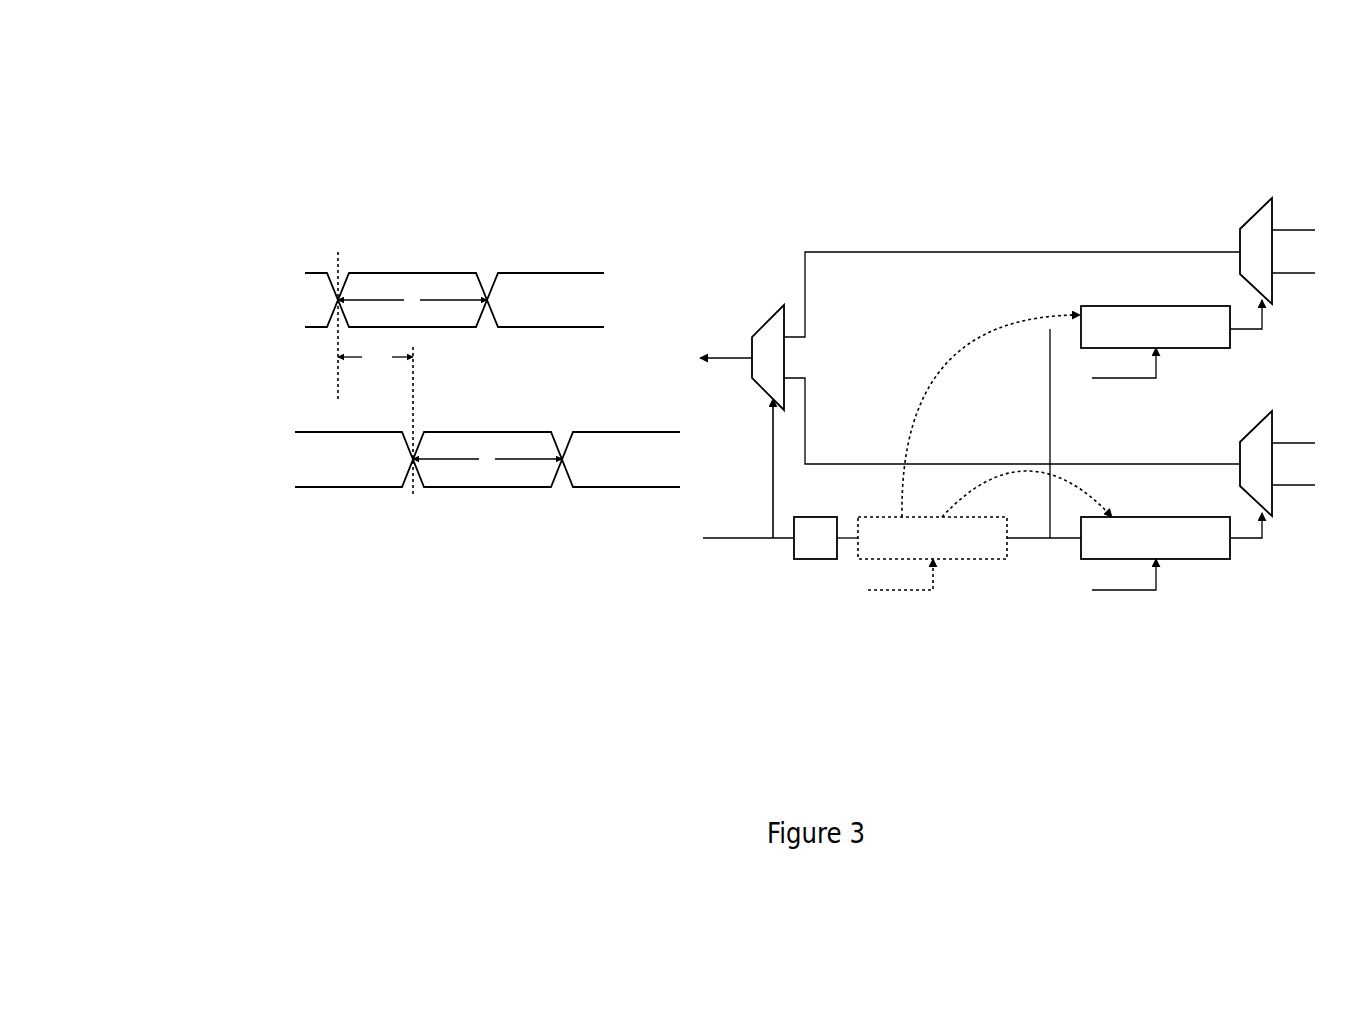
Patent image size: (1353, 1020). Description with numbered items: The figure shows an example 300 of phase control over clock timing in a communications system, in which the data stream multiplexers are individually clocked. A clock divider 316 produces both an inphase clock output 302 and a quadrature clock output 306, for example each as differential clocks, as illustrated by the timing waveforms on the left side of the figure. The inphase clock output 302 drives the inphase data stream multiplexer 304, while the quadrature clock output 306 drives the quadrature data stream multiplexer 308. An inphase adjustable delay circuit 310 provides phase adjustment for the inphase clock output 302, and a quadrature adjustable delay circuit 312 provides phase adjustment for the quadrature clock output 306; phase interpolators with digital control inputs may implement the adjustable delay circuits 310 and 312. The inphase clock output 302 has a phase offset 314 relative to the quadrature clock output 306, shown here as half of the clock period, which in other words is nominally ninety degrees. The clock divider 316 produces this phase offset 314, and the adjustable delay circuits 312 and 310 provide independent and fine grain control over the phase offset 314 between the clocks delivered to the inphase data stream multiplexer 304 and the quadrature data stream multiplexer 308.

The example of phase control over clock timing 300 is at (195, 85).
The inphase clock output 302 is at (1249, 539).
The inphase data stream multiplexer 304 is at (1262, 433).
The quadrature clock output 306 is at (1249, 331).
The quadrature data stream multiplexer 308 is at (1262, 221).
The inphase adjustable delay circuit 310 is at (1199, 559).
The quadrature adjustable delay circuit 312 is at (1102, 316).
The phase offset 314 is at (396, 358).
The clock divider 316 is at (812, 559).